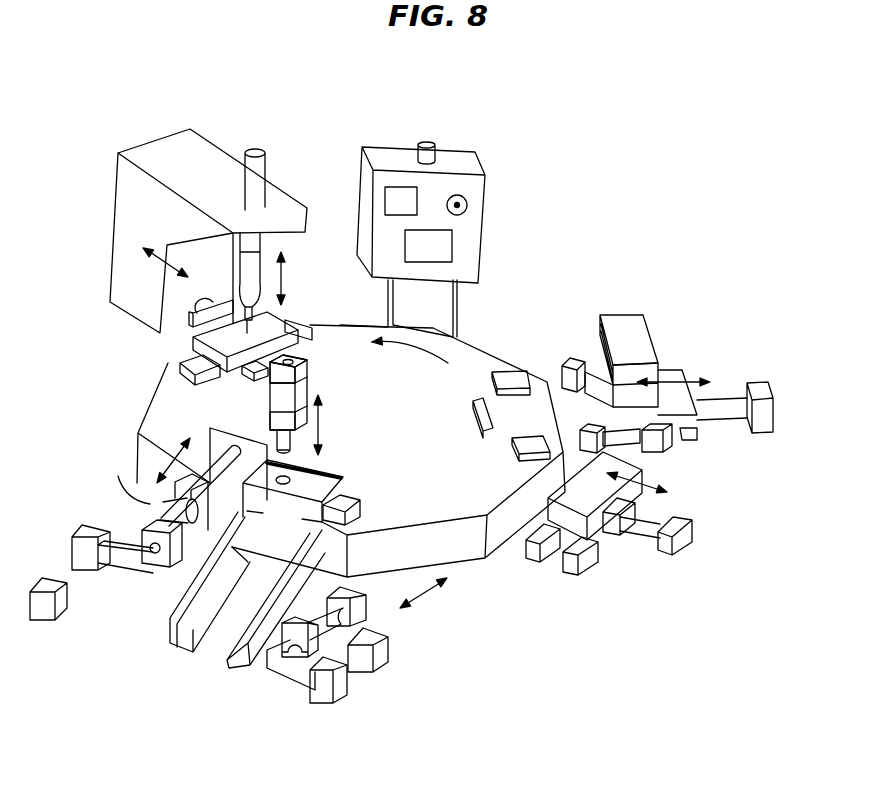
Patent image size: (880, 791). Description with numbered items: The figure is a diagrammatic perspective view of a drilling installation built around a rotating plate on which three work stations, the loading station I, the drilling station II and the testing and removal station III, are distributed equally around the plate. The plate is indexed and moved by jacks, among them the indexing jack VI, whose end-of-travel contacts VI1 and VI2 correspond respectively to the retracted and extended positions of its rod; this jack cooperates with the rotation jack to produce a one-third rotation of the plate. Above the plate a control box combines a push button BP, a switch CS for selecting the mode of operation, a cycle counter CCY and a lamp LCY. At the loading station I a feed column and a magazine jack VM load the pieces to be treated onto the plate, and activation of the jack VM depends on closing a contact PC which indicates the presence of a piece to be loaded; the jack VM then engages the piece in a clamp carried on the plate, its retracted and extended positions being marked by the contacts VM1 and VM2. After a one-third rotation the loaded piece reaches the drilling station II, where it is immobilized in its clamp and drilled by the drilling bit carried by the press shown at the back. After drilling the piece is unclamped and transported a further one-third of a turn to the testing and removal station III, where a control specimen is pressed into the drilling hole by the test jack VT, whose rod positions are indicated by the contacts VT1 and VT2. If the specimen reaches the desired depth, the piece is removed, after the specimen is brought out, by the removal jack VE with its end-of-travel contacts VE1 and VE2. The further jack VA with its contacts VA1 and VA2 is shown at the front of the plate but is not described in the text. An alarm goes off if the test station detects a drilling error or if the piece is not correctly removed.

The lamp LCY is at (422, 143).
The switch CS is at (401, 201).
The cycle counter CCY is at (428, 246).
The push button BP is at (460, 209).
The contact PC is at (575, 362).
The magazine jack VM is at (717, 403).
The magazine jack retracted position contact VM1 is at (660, 443).
The magazine jack extended position contact VM2 is at (547, 456).
The loading station I is at (501, 404).
The drilling station II is at (246, 348).
The testing and removal station III is at (301, 493).
The test jack VT is at (280, 393).
The test jack retracted position contact VT1 is at (280, 372).
The test jack extended position contact VT2 is at (280, 412).
The removal jack VE is at (173, 517).
The removal jack retracted position contact VE1 is at (65, 605).
The removal jack extended position contact VE2 is at (83, 535).
The removal device VA is at (353, 640).
The removal device part VA1 is at (322, 690).
The removal device part VA2 is at (382, 657).
The indexing jack VI is at (647, 528).
The indexing jack retracted position contact VI1 is at (568, 567).
The indexing jack extended position contact VI2 is at (532, 553).